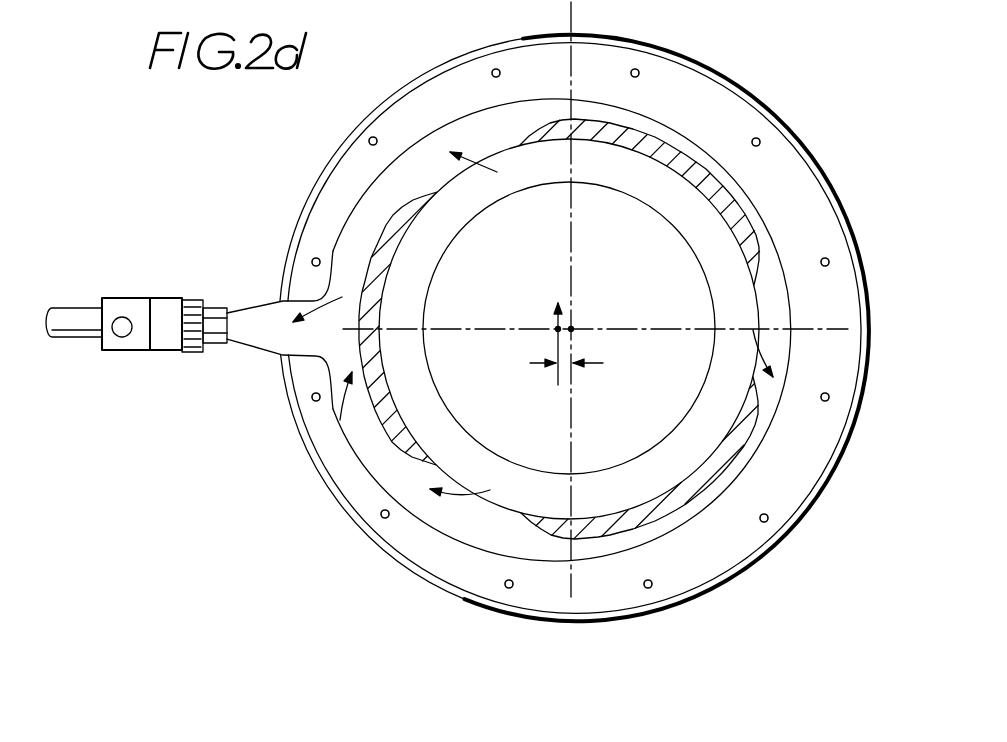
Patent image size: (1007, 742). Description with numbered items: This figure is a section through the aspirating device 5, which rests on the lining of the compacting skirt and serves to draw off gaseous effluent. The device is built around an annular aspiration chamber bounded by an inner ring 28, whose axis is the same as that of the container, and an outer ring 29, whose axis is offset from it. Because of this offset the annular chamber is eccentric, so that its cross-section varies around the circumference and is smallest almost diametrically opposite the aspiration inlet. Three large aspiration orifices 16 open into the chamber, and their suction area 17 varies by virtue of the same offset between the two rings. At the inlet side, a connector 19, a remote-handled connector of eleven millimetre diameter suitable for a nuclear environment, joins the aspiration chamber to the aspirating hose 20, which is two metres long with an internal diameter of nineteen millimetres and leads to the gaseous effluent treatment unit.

The aspirating device 5 is at (822, 147).
The large aspiration orifices 16 is at (484, 152).
The suction area 17 is at (433, 470).
The connector 19 is at (137, 338).
The aspirating hose 20 is at (78, 308).
The inner ring 28 is at (640, 138).
The outer ring 29 is at (707, 147).